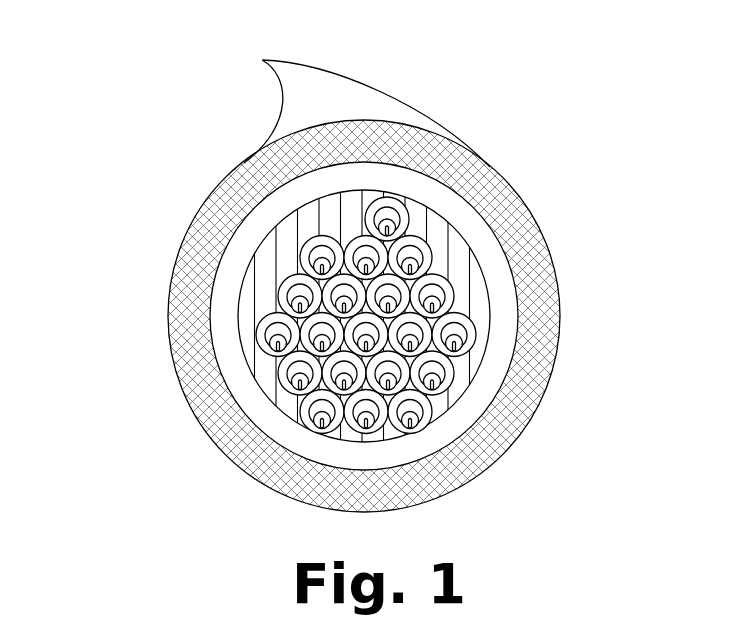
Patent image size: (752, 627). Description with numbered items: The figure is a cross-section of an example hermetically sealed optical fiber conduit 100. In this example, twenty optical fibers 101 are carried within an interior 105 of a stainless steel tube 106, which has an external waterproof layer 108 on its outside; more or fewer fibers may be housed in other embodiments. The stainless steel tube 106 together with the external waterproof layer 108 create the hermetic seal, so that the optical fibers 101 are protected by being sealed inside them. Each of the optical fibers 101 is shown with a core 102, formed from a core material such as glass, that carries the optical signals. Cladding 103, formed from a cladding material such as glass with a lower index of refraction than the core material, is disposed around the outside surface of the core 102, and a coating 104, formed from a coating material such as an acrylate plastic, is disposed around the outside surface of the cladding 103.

The hermetically sealed optical fiber conduit 100 is at (348, 264).
The optical fiber 101 is at (270, 373).
The core 102 is at (289, 294).
The cladding 103 is at (303, 251).
The coating 104 is at (396, 196).
The interior 105 is at (475, 291).
The stainless steel tube 106 is at (495, 371).
The external waterproof layer 108 is at (480, 452).